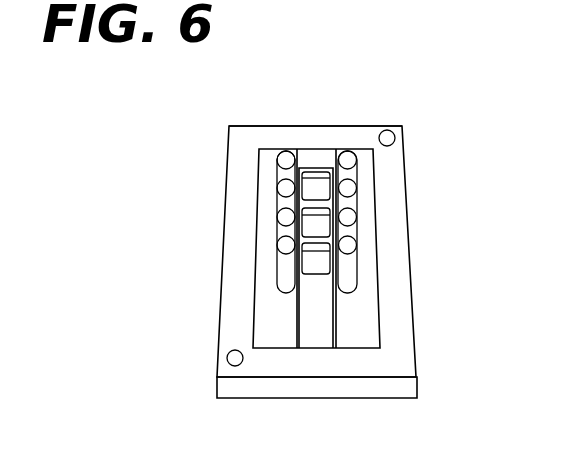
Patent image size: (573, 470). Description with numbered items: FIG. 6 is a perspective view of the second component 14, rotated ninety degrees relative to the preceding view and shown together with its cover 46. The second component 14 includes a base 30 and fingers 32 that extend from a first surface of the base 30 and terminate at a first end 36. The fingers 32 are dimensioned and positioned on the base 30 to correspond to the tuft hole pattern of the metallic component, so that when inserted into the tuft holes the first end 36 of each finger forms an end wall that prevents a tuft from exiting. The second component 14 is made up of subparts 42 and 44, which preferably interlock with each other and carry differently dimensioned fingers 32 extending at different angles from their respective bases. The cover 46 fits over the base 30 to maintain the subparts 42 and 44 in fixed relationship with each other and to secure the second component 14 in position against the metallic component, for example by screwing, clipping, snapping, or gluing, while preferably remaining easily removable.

The second component 14 is at (406, 102).
The cover 46 is at (312, 132).
The subpart 42 is at (265, 250).
The subpart 44 is at (327, 325).
The base 30 is at (360, 235).
The fingers 32 is at (305, 263).
The first end 36 is at (345, 217).